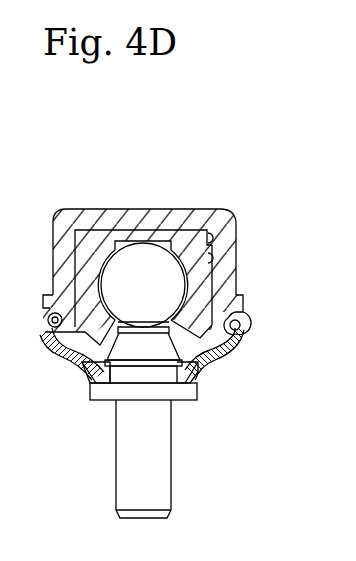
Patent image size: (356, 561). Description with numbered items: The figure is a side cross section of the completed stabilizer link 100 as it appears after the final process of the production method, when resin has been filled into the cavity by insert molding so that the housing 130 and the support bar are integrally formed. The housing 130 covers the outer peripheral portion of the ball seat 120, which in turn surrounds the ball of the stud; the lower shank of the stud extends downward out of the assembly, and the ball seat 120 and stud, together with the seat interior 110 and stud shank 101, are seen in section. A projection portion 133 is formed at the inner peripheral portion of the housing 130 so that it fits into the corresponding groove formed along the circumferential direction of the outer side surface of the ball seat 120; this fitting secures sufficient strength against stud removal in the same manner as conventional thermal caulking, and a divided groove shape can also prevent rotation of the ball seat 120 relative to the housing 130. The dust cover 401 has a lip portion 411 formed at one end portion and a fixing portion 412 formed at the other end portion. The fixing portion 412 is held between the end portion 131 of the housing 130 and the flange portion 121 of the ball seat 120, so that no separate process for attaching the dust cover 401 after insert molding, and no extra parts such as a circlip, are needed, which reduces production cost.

The stabilizer link 100 is at (236, 170).
The ball stud shaft 101 is at (172, 478).
The ball seat 110 is at (64, 285).
The ball seat 120 is at (99, 240).
The flange portion 121 is at (245, 323).
The housing 130 is at (173, 222).
The end portion 131 is at (48, 328).
The projection portion 133 is at (212, 237).
The dust cover 401 is at (229, 347).
The lip portion 411 is at (200, 372).
The fixing portion 412 is at (240, 304).